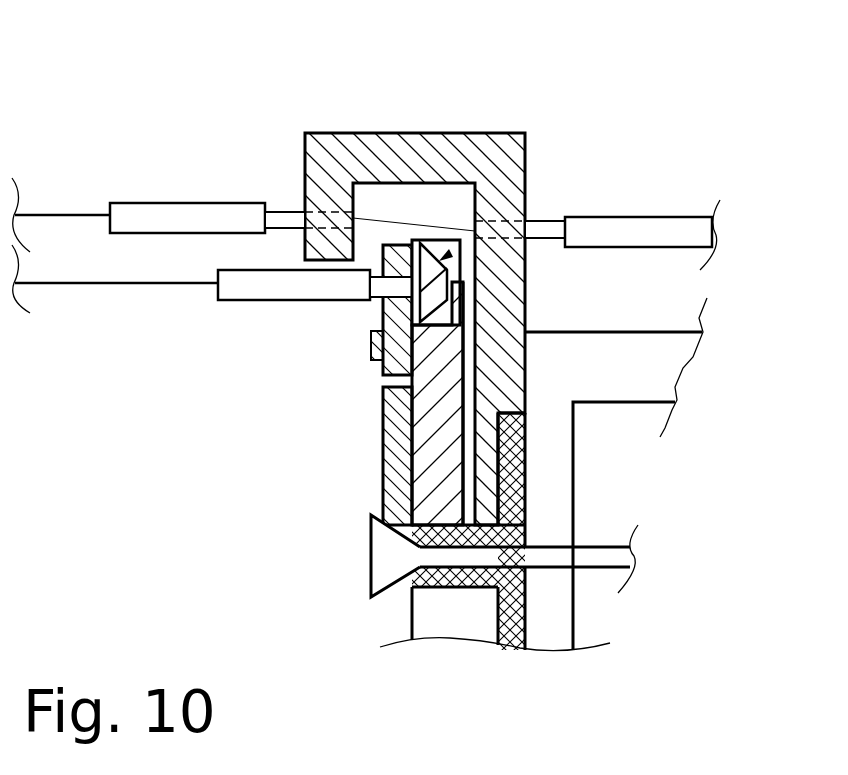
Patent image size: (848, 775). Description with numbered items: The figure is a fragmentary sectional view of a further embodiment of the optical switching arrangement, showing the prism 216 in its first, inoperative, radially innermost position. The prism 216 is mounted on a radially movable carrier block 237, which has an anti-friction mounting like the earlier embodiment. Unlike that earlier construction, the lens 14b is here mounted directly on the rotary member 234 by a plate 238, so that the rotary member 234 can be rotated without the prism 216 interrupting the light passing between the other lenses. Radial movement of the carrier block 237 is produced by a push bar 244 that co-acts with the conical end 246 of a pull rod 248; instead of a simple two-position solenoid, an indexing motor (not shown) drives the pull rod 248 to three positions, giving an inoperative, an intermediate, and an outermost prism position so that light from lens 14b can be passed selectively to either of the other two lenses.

The lens 14b is at (392, 298).
The prism 216 is at (456, 242).
The rotary member 234 is at (422, 488).
The carrier block 237 is at (430, 240).
The plate 238 is at (392, 263).
The push bar 244 is at (393, 457).
The conical end 246 is at (373, 577).
The pull rod 248 is at (585, 547).